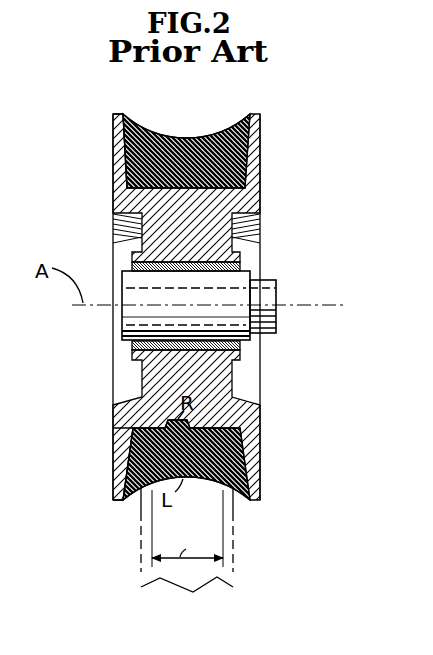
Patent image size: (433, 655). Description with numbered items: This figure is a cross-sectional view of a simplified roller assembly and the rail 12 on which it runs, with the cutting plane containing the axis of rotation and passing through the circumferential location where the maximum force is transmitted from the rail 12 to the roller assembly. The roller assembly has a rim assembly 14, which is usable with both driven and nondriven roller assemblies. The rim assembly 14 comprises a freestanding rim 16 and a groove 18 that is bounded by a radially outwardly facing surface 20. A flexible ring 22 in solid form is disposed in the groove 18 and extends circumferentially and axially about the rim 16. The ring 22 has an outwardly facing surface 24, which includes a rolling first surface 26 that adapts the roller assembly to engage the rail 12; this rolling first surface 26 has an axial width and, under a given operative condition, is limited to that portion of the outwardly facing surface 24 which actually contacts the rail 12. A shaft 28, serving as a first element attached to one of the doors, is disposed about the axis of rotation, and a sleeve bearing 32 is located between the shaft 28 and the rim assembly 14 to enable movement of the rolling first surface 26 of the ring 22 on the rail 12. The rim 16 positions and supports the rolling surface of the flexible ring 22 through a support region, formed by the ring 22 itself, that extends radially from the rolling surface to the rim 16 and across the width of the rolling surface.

The rail 12 is at (141, 522).
The rim assembly 14 is at (270, 115).
The freestanding rim 16 is at (113, 190).
The groove 18 is at (240, 128).
The radially outwardly facing surface 20 is at (188, 150).
The flexible ring 22 is at (118, 470).
The outwardly facing surface 24 is at (131, 116).
The rolling first surface 26 is at (196, 479).
The shaft 28 is at (277, 296).
The sleeve bearing 32 is at (243, 346).